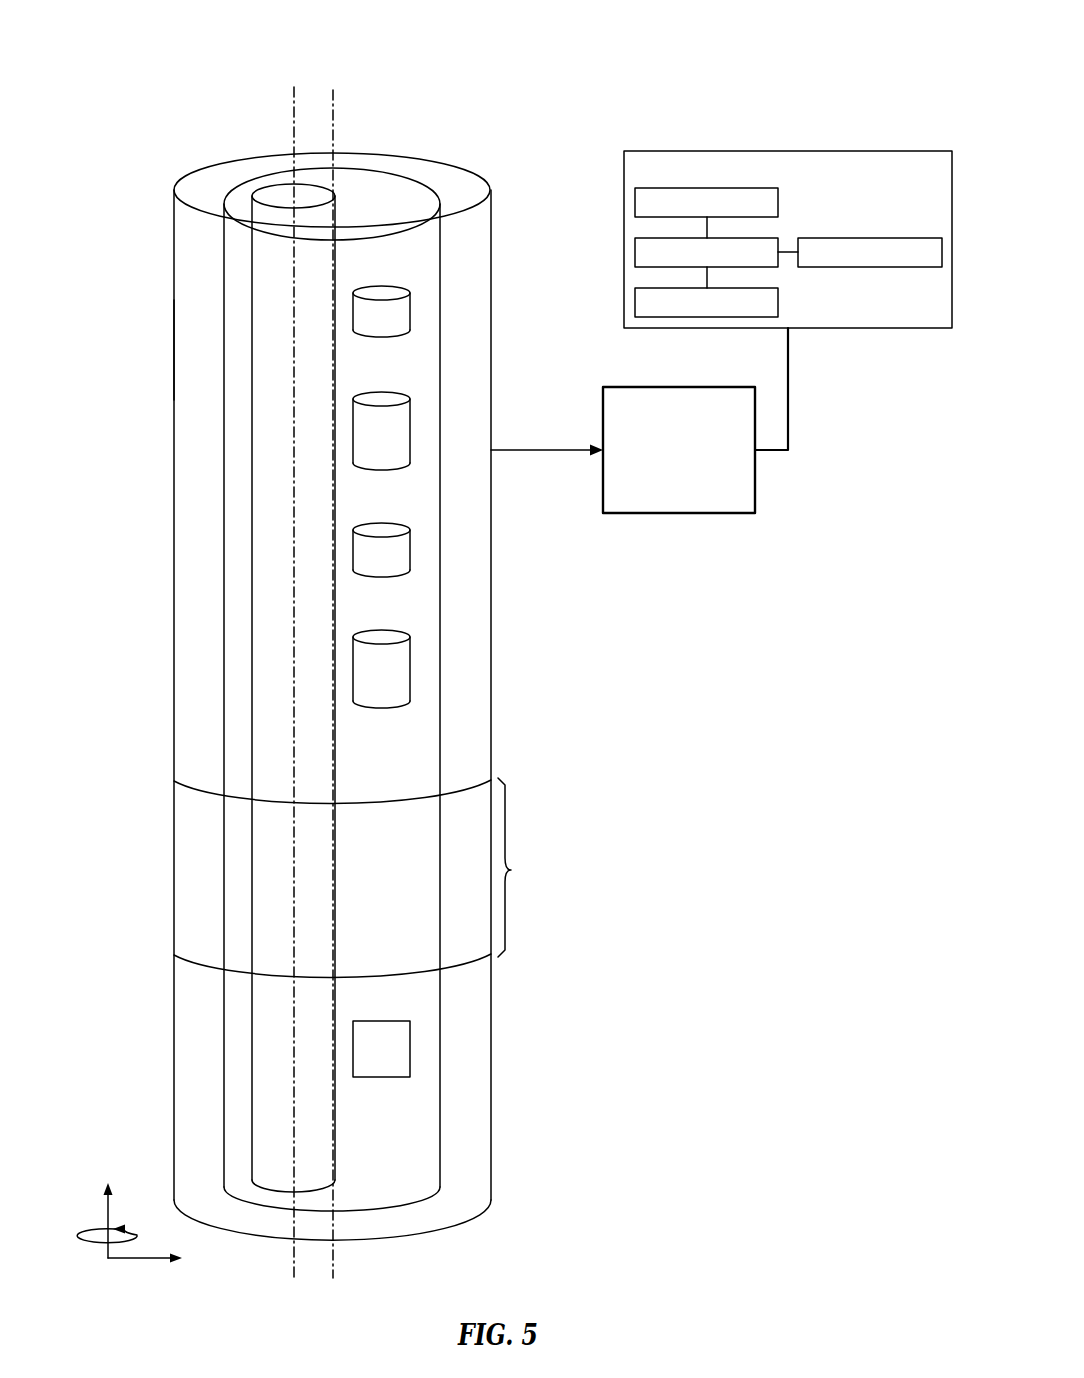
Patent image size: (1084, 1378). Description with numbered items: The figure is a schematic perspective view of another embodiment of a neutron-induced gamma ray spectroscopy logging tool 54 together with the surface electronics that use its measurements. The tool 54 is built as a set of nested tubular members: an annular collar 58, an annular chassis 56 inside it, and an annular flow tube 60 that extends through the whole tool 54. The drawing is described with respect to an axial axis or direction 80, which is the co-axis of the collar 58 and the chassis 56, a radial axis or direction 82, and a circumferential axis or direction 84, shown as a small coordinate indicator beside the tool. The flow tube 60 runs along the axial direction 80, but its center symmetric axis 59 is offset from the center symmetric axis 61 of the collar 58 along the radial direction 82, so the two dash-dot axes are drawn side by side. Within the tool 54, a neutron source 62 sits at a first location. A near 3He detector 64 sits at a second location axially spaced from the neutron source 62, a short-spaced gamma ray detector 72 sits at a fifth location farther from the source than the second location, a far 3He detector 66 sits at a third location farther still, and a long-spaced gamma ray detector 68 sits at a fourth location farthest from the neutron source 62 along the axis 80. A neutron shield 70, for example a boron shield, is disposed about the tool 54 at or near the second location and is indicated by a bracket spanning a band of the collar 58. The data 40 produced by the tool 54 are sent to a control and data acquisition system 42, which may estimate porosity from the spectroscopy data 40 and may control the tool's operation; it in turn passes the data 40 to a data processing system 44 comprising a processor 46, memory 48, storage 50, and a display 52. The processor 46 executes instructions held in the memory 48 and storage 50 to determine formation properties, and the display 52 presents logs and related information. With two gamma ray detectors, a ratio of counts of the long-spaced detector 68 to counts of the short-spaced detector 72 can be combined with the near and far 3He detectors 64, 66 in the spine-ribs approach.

The data 40 is at (527, 452).
The control and data acquisition system 42 is at (680, 387).
The data processing system 44 is at (790, 151).
The processor 46 is at (635, 251).
The memory 48 is at (635, 201).
The storage 50 is at (778, 298).
The display 52 is at (872, 237).
The neutron-induced gamma ray spectroscopy logging tool 54 is at (250, 38).
The chassis 56 is at (440, 748).
The collar 58 is at (174, 343).
The center symmetric axis of the flow tube 59 is at (294, 133).
The flow tube 60 is at (253, 517).
The center symmetric axis of the collar 61 is at (333, 110).
The neutron source 62 is at (410, 1040).
The near 3He detector 64 is at (410, 667).
The far 3He detector 66 is at (411, 428).
The long-spaced gamma ray detector 68 is at (410, 310).
The neutron shield 70 is at (511, 870).
The short-spaced gamma ray detector 72 is at (410, 548).
The axial axis or direction 80 is at (109, 1218).
The radial axis or direction 82 is at (137, 1258).
The circumferential axis or direction 84 is at (95, 1230).